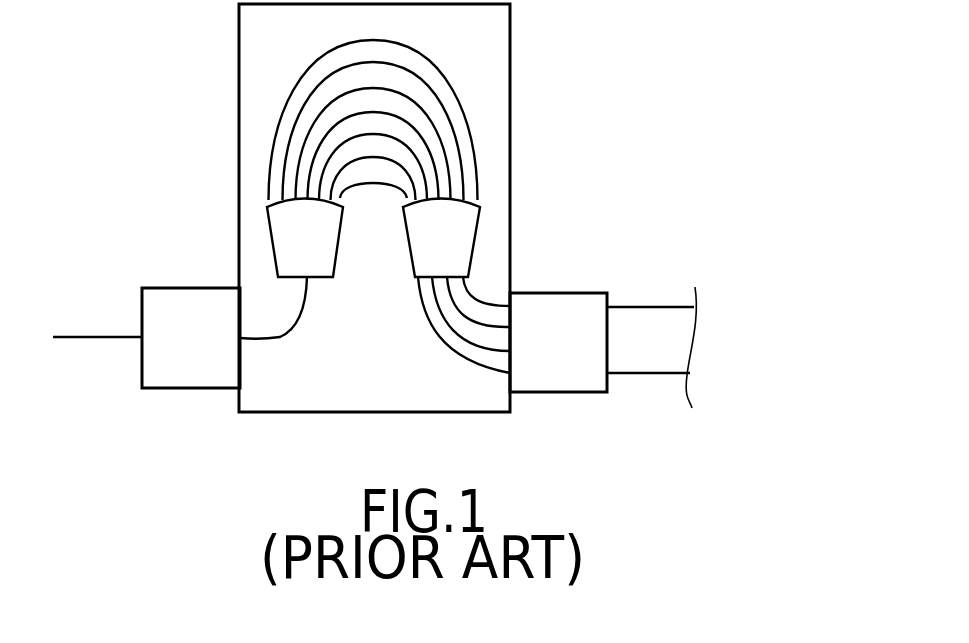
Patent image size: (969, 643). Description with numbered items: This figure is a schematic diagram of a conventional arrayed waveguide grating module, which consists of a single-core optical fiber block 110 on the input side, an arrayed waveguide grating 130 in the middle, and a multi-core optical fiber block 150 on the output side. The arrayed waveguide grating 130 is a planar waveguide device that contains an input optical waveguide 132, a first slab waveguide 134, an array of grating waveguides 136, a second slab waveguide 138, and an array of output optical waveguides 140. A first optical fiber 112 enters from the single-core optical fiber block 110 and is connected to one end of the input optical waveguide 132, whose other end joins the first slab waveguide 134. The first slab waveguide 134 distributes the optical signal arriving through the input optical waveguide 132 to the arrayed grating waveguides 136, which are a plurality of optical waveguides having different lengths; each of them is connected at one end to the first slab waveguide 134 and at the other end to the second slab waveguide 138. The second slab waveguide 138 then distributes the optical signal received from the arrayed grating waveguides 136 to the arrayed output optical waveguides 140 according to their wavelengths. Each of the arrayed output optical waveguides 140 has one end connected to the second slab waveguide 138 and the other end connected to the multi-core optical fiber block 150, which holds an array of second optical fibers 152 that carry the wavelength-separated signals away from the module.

The single-core optical fiber block 110 is at (157, 281).
The first optical fiber 112 is at (73, 337).
The arrayed waveguide grating 130 is at (516, 72).
The input optical waveguide 132 is at (285, 340).
The first slab waveguide 134 is at (266, 219).
The arrayed grating waveguides 136 is at (274, 109).
The second slab waveguide 138 is at (482, 216).
The arrayed output optical waveguides 140 is at (432, 351).
The multi-core optical fiber block 150 is at (588, 284).
The second optical fibers 152 is at (654, 297).